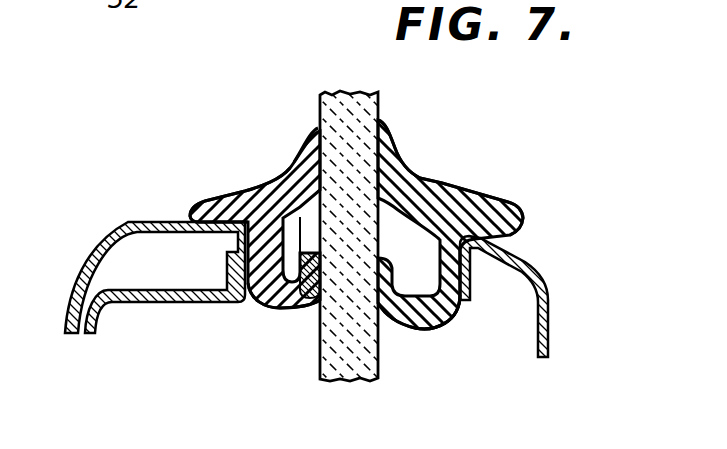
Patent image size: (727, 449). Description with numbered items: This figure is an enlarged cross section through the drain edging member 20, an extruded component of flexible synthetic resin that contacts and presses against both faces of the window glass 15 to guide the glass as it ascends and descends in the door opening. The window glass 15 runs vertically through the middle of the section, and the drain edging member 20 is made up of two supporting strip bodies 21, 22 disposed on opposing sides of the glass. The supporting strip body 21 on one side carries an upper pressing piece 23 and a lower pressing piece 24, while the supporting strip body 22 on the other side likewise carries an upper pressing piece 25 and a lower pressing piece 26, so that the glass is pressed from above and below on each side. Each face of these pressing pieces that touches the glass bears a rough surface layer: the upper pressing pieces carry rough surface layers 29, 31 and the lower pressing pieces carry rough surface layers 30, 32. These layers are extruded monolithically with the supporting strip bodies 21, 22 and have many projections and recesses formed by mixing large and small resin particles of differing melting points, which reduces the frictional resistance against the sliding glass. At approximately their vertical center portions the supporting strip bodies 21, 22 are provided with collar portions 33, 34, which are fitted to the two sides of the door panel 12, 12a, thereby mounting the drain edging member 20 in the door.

The door panel 12 is at (118, 232).
The door panel 12a is at (528, 266).
The window glass 15 is at (352, 367).
The drain edging member 20 is at (486, 189).
The supporting strip body 21 is at (262, 185).
The supporting strip body 22 is at (437, 190).
The upper pressing piece 23 is at (296, 162).
The lower pressing piece 24 is at (290, 312).
The upper pressing piece 25 is at (400, 142).
The lower pressing piece 26 is at (402, 330).
The rough surface layer 29 is at (316, 136).
The rough surface layer 30 is at (306, 300).
The rough surface layer 31 is at (383, 118).
The rough surface layer 32 is at (440, 322).
The collar portion 33 is at (204, 210).
The collar portion 34 is at (521, 212).